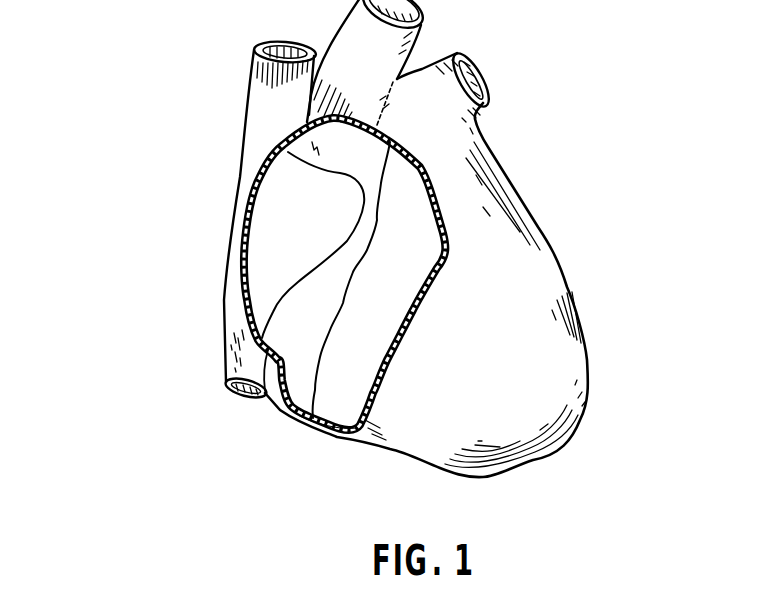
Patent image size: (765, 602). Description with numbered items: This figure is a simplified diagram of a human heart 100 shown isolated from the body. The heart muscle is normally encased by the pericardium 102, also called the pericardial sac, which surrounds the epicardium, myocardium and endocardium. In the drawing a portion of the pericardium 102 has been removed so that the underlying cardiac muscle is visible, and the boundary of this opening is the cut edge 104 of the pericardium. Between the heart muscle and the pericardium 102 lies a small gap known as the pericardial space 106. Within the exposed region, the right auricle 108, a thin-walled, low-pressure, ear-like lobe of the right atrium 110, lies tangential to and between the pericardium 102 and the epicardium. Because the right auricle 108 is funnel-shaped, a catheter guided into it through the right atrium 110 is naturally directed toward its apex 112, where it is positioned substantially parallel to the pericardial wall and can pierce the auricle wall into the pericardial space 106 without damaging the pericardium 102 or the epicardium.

The heart 100 is at (186, 113).
The pericardium 102 is at (537, 275).
The cut edge of pericardium 104 is at (278, 413).
The pericardial space 106 is at (337, 418).
The right auricle 108 is at (340, 217).
The right atrium 110 is at (275, 277).
The apex of right auricle 112 is at (365, 164).